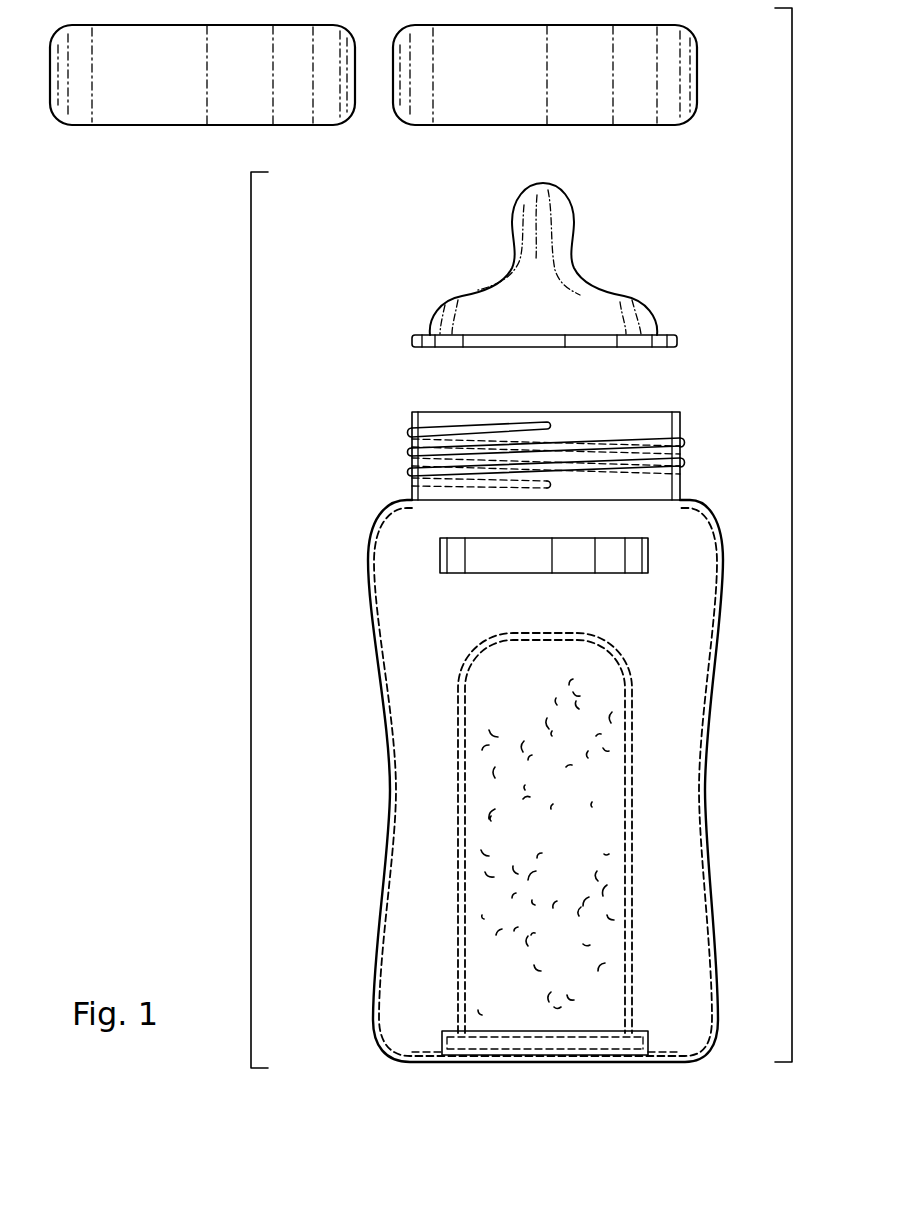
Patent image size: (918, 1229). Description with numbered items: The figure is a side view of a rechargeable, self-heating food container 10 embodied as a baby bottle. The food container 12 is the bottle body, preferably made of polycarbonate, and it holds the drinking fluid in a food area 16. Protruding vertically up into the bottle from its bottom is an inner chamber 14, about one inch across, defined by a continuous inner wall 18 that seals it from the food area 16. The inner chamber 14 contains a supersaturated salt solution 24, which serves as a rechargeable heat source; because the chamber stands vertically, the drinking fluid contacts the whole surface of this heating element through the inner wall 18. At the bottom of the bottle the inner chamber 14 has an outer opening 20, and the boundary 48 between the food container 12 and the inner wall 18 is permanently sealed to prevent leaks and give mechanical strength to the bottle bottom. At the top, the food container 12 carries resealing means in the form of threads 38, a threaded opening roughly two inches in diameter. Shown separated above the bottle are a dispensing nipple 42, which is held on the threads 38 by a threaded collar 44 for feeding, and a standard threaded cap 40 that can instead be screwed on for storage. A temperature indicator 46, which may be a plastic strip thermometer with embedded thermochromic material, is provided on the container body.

The rechargeable, self-heating food container 10 is at (250, 621).
The food container 12 is at (378, 532).
The inner chamber 14 is at (603, 777).
The food area 16 is at (405, 658).
The inner wall 18 is at (458, 932).
The outer opening 20 is at (537, 1073).
The supersaturated salt solution 24 is at (558, 878).
The threads 38 is at (681, 424).
The threaded cap 40 is at (158, 126).
The dispensing nipple 42 is at (653, 317).
The threaded collar 44 is at (697, 83).
The temperature indicator 46 is at (638, 557).
The boundary 48 is at (418, 1062).